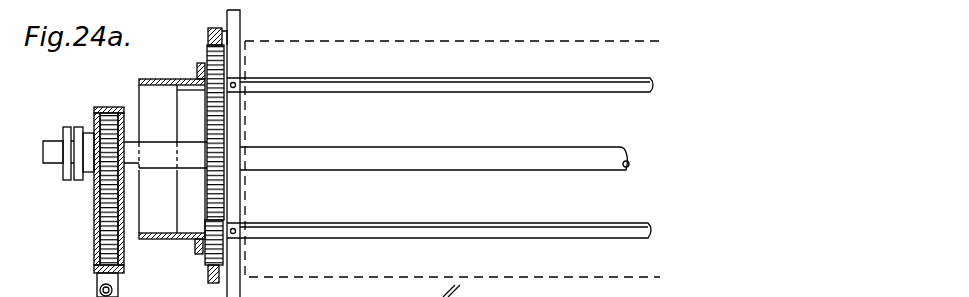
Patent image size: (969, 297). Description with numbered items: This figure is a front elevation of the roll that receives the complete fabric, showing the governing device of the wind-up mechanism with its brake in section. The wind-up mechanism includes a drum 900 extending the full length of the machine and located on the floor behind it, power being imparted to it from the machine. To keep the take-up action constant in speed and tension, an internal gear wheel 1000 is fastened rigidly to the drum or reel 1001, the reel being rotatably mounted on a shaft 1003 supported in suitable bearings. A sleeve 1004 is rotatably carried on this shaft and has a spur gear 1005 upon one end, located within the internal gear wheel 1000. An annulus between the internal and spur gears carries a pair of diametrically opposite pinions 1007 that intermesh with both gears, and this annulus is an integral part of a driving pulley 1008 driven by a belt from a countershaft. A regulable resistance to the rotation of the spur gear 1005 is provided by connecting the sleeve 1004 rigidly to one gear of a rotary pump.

The drum 900 is at (592, 48).
The internal gear wheel 1000 is at (222, 33).
The reel 1001 is at (236, 117).
The shaft 1003 is at (455, 160).
The sleeve 1004 is at (153, 158).
The spur gear 1005 is at (214, 188).
The pinion 1007 is at (212, 250).
The driving pulley 1008 is at (152, 79).